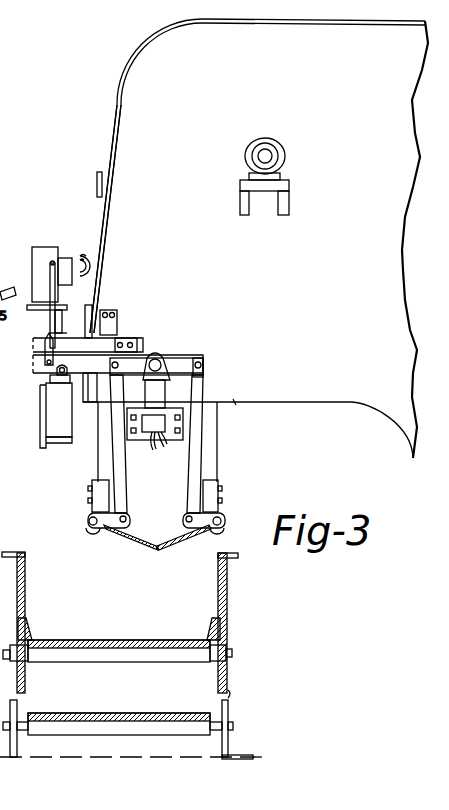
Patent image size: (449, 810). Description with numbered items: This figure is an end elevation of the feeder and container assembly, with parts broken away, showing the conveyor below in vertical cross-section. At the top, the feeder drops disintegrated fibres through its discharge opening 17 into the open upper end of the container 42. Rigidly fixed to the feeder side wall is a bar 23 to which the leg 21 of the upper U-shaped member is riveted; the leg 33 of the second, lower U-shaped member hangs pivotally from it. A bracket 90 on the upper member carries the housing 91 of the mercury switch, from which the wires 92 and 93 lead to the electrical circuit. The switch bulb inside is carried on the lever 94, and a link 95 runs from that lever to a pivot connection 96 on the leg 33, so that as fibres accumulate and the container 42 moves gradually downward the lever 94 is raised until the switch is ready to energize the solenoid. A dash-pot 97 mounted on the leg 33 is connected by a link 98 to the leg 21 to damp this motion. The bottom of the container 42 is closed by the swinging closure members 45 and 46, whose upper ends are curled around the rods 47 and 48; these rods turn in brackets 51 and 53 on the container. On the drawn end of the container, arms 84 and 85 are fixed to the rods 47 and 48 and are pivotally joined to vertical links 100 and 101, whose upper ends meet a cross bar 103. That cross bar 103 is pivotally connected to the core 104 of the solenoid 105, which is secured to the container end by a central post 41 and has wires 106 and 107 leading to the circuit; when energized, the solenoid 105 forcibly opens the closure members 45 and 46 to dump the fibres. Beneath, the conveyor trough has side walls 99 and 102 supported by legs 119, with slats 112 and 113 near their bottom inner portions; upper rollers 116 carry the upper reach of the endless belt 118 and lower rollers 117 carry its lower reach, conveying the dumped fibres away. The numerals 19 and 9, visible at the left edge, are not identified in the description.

The discharge opening 17 is at (237, 405).
The frame 19 is at (10, 361).
The leg 21 is at (120, 338).
The bar 23 is at (112, 310).
The leg 33 is at (100, 367).
The central post 41 is at (165, 393).
The container 42 is at (217, 445).
The closure member 45 is at (135, 541).
The closure member 46 is at (174, 545).
The rod 47 is at (85, 520).
The rod 48 is at (226, 526).
The bracket 51 is at (92, 492).
The bracket 53 is at (220, 500).
The arm 84 is at (106, 530).
The arm 85 is at (214, 530).
The bracket 90 is at (33, 311).
The housing 91 is at (40, 250).
The wire 92 is at (82, 256).
The wire 93 is at (92, 272).
The lever 94 is at (56, 295).
The link 95 is at (45, 345).
The pivot connection 96 is at (55, 371).
The dash-pot 97 is at (47, 404).
The link 98 is at (40, 425).
The side wall 99 is at (25, 597).
The link 100 is at (124, 496).
The link 101 is at (186, 503).
The side wall 102 is at (218, 590).
The cross bar 103 is at (194, 360).
The core 104 is at (158, 356).
The solenoid 105 is at (141, 441).
The wire 106 is at (152, 452).
The wire 107 is at (163, 447).
The slat 112 is at (32, 631).
The slat 113 is at (207, 631).
The upper roller 116 is at (105, 661).
The lower roller 117 is at (101, 735).
The endless belt 118 is at (131, 639).
The leg 119 is at (230, 700).
The frame 9 is at (9, 539).